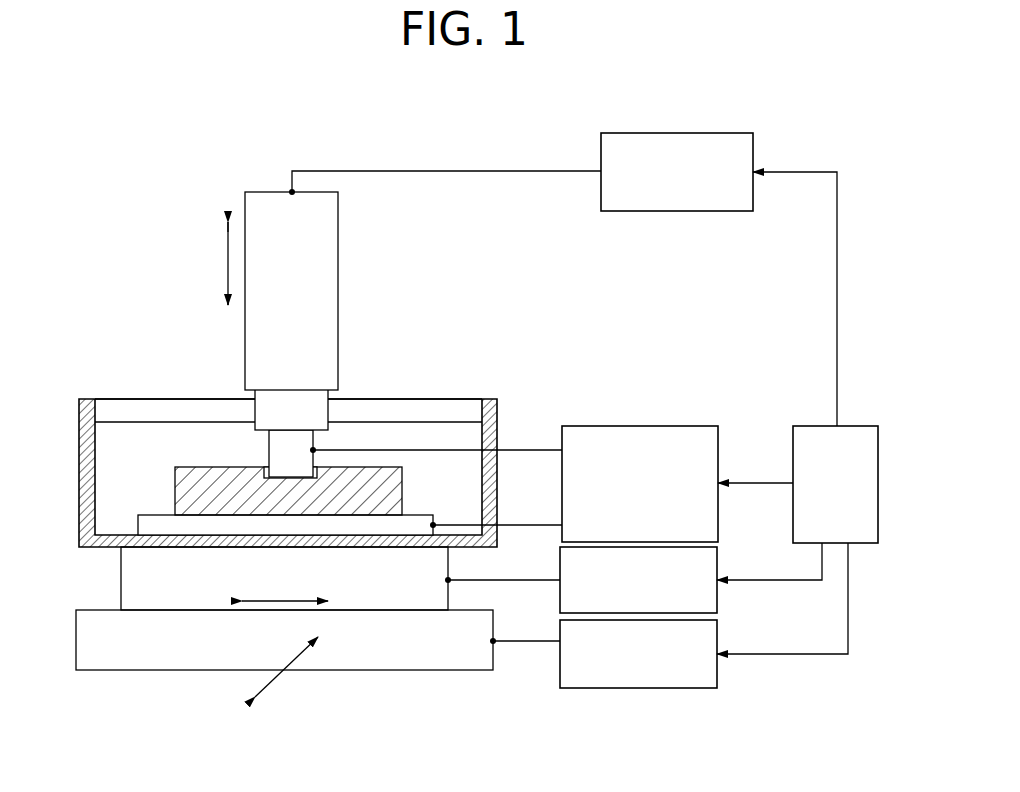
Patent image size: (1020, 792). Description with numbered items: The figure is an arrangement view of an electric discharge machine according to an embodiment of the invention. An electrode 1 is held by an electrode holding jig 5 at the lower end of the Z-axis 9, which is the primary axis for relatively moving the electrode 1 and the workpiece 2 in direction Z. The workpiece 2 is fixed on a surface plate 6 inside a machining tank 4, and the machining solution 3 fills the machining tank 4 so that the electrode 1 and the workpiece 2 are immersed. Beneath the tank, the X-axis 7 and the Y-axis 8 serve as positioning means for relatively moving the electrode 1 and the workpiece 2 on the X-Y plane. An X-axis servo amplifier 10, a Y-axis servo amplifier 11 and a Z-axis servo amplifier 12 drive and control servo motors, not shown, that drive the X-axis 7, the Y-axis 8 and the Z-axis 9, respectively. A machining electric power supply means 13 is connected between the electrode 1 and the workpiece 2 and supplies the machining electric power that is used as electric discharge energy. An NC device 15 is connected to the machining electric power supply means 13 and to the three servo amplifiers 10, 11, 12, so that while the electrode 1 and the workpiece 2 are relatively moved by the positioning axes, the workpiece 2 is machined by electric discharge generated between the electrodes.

The electrode 1 is at (280, 456).
The workpiece 2 is at (186, 490).
The machining solution 3 is at (397, 430).
The machining tank 4 is at (490, 399).
The electrode holding jig 5 is at (265, 410).
The surface plate 6 is at (150, 527).
The X-axis 7 is at (120, 578).
The Y-axis 8 is at (493, 626).
The Z-axis 9 is at (327, 292).
The X-axis servo amplifier 10 is at (717, 563).
The Y-axis servo amplifier 11 is at (717, 635).
The Z-axis servo amplifier 12 is at (682, 133).
The machining electric power supply means 13 is at (673, 426).
The NC device 15 is at (858, 426).